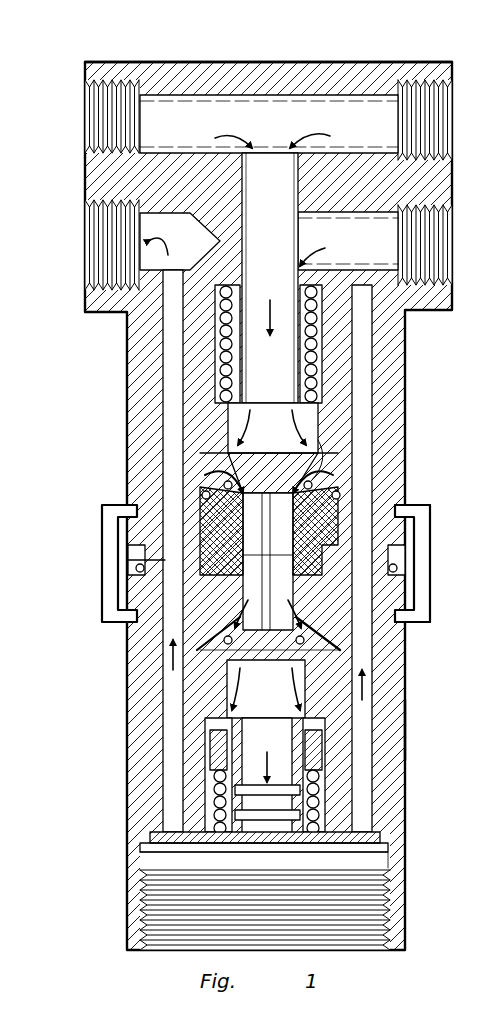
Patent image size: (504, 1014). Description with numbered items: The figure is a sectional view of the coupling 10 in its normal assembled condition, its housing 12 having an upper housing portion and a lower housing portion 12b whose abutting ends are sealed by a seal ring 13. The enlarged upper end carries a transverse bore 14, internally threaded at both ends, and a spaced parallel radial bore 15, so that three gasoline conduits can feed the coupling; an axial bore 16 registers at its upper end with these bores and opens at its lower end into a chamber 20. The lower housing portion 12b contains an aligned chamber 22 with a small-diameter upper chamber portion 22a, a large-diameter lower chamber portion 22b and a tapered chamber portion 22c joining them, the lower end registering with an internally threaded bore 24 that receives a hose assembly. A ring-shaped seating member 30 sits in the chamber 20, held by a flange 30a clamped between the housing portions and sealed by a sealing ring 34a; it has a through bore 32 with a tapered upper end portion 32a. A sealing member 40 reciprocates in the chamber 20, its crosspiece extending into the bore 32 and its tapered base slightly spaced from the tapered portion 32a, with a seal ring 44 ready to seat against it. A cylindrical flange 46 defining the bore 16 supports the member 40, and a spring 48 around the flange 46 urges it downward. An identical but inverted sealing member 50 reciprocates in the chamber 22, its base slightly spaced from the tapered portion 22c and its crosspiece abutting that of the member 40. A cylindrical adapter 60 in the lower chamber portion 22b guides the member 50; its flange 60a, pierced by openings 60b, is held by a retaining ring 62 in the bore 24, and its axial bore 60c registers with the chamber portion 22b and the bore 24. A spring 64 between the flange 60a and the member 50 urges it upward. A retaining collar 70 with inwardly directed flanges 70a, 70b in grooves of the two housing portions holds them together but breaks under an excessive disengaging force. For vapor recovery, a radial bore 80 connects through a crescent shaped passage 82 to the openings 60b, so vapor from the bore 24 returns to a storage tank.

The coupling 10 is at (203, 60).
The housing 12 is at (462, 180).
The lower housing portion 12b is at (415, 696).
The seal ring 13 is at (398, 566).
The transverse bore 14 is at (322, 100).
The radial bore 15 is at (346, 212).
The axial bore 16 is at (240, 200).
The chamber 20 is at (373, 340).
The chamber 22 is at (240, 700).
The upper chamber portion 22a is at (248, 605).
The lower chamber portion 22b is at (330, 745).
The tapered chamber portion 22c is at (345, 660).
The internally threaded bore 24 is at (378, 950).
The seating member 30 is at (205, 510).
The flange 30a is at (150, 560).
The through bore 32 is at (290, 488).
The tapered upper end portion 32a is at (330, 460).
The sealing ring 34a is at (340, 480).
The sealing member 40 is at (325, 395).
The seal ring 44 is at (205, 470).
The cylindrical flange 46 is at (316, 300).
The spring 48 is at (220, 335).
The sealing member 50 is at (326, 765).
The cylindrical adapter 60 is at (270, 716).
The flange 60a is at (215, 820).
The openings 60b is at (185, 838).
The axial bore 60c is at (288, 753).
The retaining ring 62 is at (390, 848).
The spring 64 is at (218, 778).
The retaining collar 70 is at (432, 540).
The inwardly-directed flange 70a is at (418, 508).
The inwardly-directed flange 70b is at (420, 625).
The radial bore 80 is at (175, 215).
The crescent shaped passage 82 is at (165, 395).